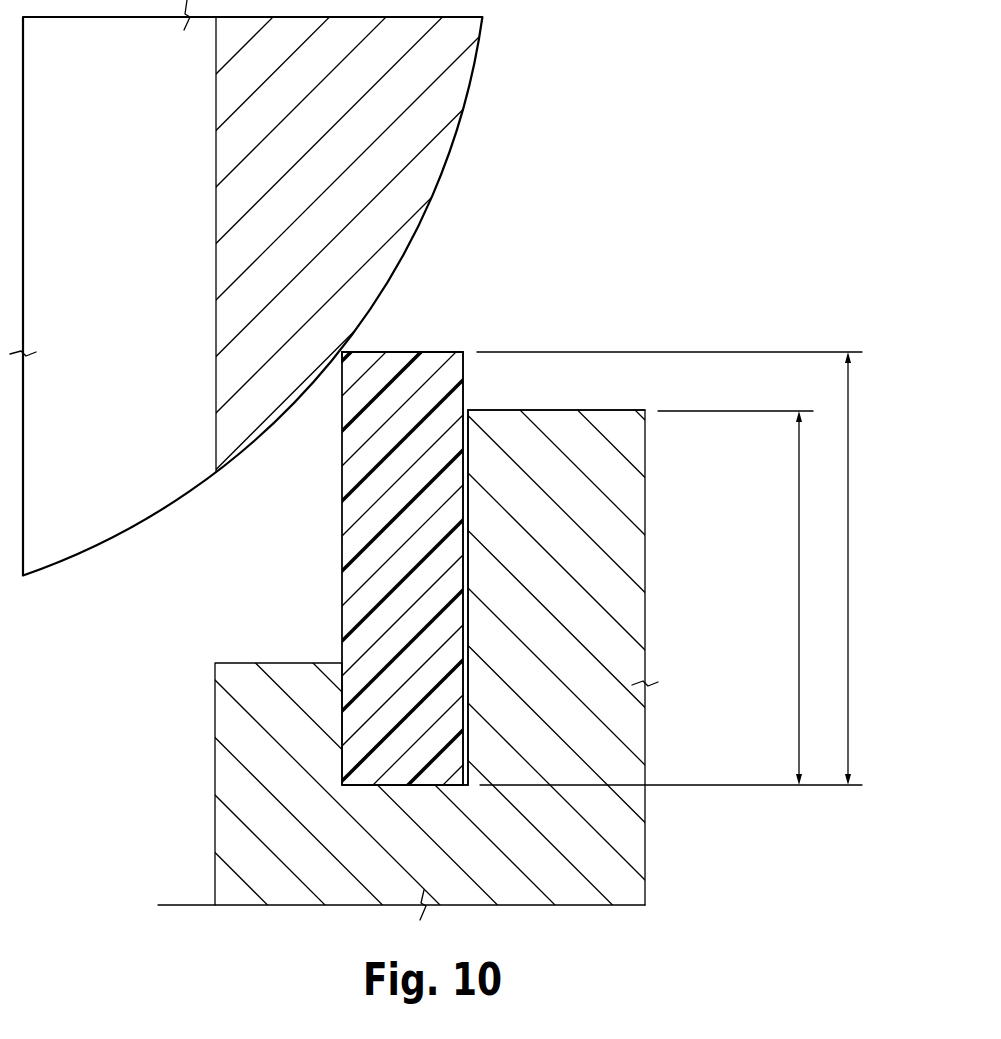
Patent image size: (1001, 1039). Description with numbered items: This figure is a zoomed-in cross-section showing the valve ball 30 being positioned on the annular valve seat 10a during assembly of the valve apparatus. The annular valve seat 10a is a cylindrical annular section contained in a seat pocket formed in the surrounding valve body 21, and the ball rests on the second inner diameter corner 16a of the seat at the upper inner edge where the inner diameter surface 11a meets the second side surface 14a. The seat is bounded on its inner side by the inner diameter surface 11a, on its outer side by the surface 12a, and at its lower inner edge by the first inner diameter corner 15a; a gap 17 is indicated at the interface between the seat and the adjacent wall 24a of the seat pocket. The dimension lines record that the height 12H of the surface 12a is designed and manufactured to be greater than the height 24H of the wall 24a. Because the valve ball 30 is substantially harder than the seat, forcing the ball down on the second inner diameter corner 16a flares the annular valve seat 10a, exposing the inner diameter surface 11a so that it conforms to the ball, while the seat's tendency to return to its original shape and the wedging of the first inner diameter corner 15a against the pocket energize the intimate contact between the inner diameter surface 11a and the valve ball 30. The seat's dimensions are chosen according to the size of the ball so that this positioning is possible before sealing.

The valve ball 30 is at (463, 108).
The second inner diameter corner 16a is at (345, 349).
The top surface of seal member 14a is at (431, 352).
The gap 17 is at (470, 409).
The annular valve seat 10a is at (467, 537).
The surface 12a is at (433, 493).
The housing 21 is at (622, 549).
The height of wall 24H is at (799, 583).
The height of surface 12H is at (848, 583).
The wall 24a is at (465, 685).
The inner diameter surface 11a is at (342, 596).
The first inner diameter corner 15a is at (342, 785).